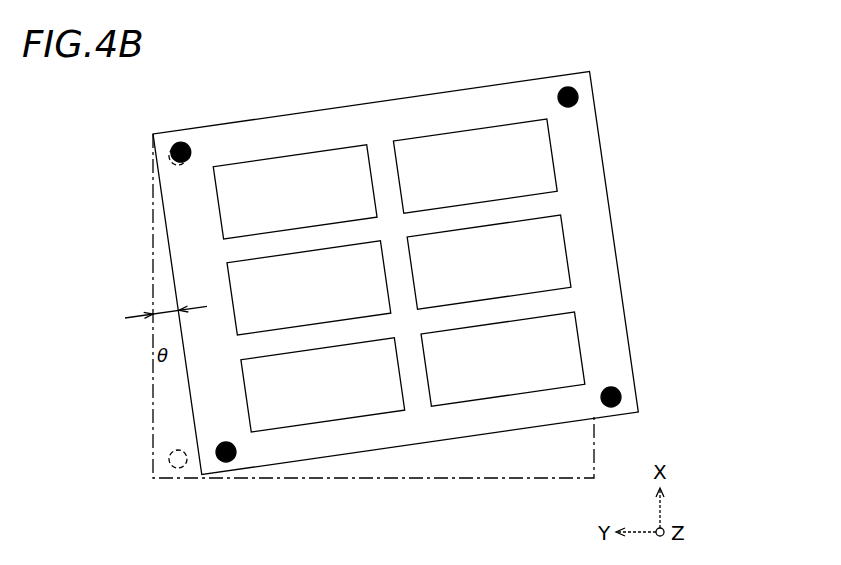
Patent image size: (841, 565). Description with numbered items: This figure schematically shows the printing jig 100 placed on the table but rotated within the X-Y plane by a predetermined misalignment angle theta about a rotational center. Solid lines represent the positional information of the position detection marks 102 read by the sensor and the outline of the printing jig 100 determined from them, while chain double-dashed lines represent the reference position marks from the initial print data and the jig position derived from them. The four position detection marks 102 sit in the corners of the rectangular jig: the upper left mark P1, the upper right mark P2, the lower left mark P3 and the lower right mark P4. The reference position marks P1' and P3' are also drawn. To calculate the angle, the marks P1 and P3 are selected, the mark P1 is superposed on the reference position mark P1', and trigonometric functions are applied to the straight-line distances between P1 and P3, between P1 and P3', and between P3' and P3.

The printing jig 100 is at (123, 125).
The position detection marks 102 is at (468, 306).
The position detection mark P1 is at (242, 120).
The position detection mark P2 is at (579, 96).
The position detection mark P3 is at (292, 487).
The position detection mark P4 is at (622, 397).
The reference position mark P1' is at (133, 169).
The reference position mark P3' is at (133, 444).